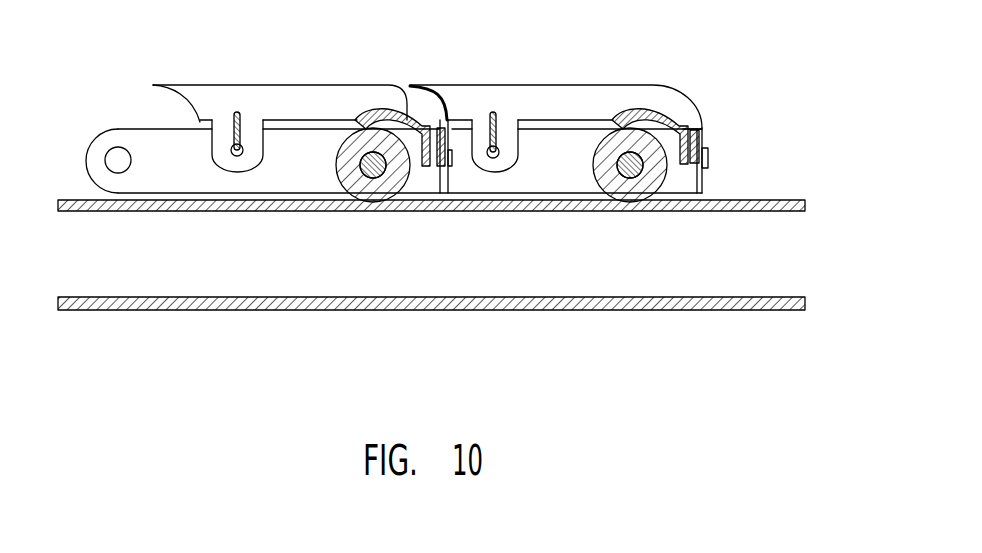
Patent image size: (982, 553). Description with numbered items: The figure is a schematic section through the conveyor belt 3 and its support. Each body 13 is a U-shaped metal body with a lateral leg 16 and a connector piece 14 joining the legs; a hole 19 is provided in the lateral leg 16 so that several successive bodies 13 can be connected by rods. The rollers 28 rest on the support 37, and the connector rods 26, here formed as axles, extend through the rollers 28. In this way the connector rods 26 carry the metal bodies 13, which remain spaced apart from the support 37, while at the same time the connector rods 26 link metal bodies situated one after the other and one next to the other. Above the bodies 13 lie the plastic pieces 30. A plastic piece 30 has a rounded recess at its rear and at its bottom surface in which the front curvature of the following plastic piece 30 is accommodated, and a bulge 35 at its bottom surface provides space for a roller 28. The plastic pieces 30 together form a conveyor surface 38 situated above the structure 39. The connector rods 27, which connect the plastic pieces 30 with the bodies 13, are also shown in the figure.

The conveyor belt 3 is at (778, 80).
The body 13 is at (166, 187).
The connector piece 14 is at (443, 122).
The lateral leg 16 is at (147, 135).
The hole 19 is at (115, 160).
The connector rod 26 is at (372, 152).
The connector rod 27 is at (247, 156).
The roller 28 is at (373, 178).
The plastic piece 30 is at (193, 85).
The bulge 35 is at (398, 113).
The support 37 is at (757, 287).
The conveyor surface 38 is at (265, 83).
The structure 39 is at (763, 182).